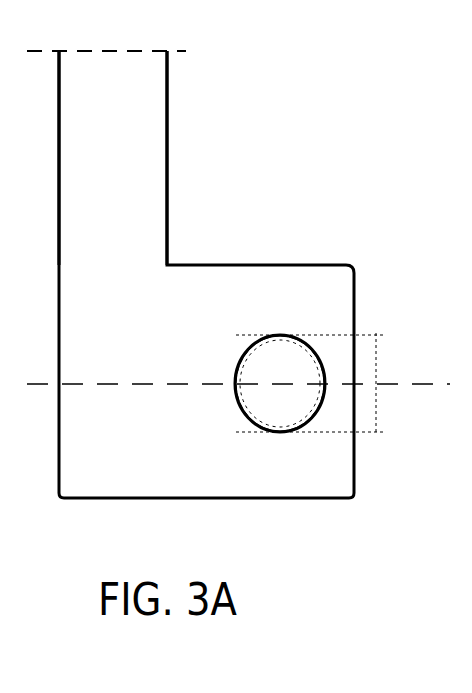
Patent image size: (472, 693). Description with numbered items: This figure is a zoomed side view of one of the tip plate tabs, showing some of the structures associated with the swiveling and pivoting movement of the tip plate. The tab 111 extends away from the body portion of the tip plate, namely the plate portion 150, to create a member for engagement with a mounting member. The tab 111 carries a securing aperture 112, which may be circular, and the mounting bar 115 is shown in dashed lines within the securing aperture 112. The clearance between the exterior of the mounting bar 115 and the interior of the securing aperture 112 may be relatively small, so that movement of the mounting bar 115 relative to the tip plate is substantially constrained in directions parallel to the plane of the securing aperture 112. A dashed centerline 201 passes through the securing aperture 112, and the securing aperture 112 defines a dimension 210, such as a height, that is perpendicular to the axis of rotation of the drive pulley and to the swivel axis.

The tab 111 is at (190, 274).
The plate portion 150 is at (179, 138).
The centerline 201 is at (238, 412).
The securing aperture 112 is at (321, 320).
The mounting bar 115 is at (232, 411).
The dimension 210 is at (345, 377).